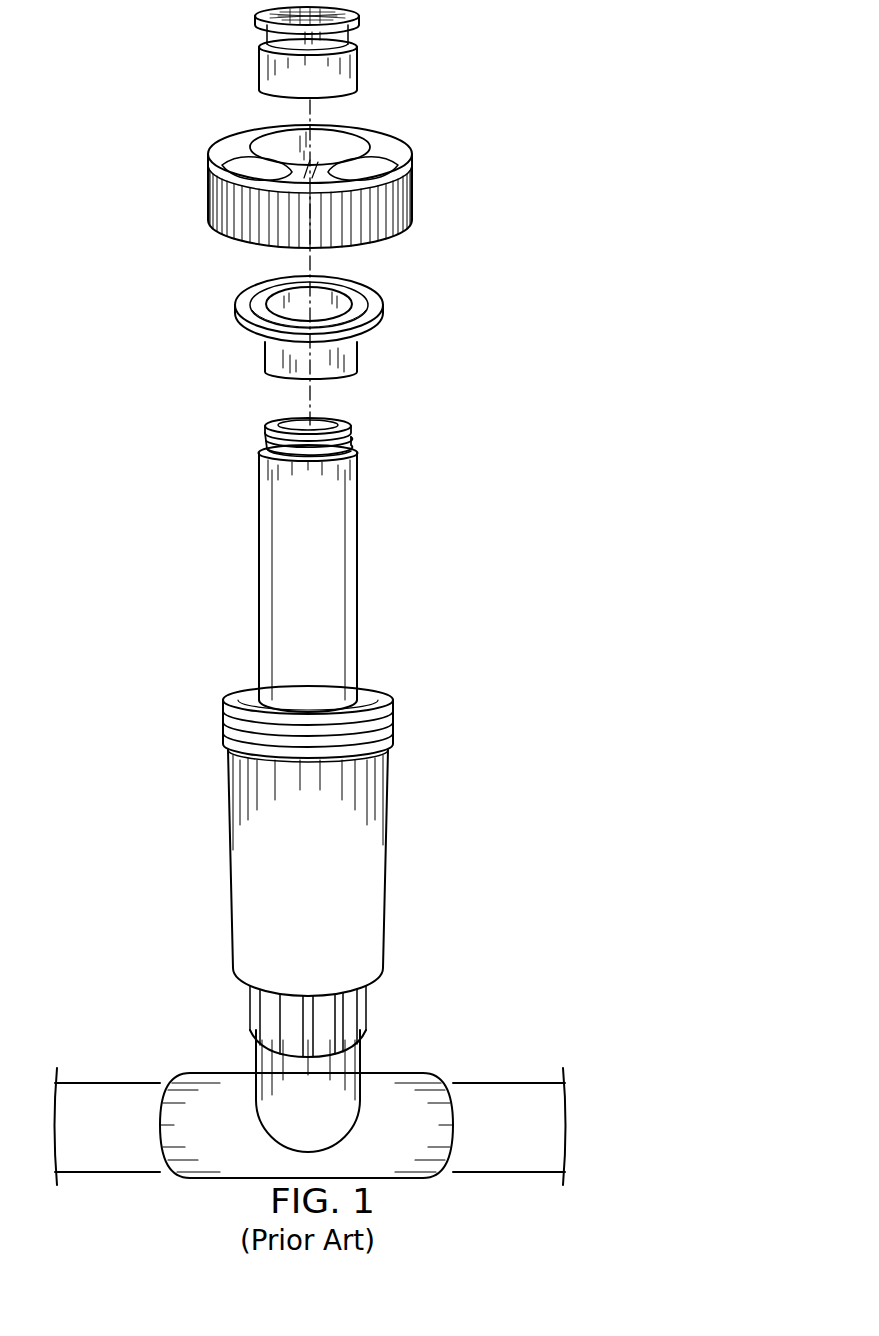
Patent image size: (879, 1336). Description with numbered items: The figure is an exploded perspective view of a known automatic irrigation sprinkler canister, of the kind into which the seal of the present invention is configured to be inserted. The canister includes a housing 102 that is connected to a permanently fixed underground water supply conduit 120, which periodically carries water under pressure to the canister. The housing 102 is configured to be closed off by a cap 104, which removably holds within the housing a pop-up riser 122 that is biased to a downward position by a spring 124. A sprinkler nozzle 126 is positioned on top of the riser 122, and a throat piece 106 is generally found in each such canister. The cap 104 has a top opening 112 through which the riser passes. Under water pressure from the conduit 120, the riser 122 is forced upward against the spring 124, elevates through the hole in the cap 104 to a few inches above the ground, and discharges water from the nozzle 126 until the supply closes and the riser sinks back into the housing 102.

The housing 102 is at (385, 883).
The cap 104 is at (349, 185).
The throat piece 106 is at (383, 305).
The cap top opening 112 is at (342, 136).
The water supply conduit 120 is at (505, 1087).
The pop-up riser 122 is at (345, 565).
The spring 124 is at (351, 437).
The sprinkler nozzle 126 is at (359, 18).